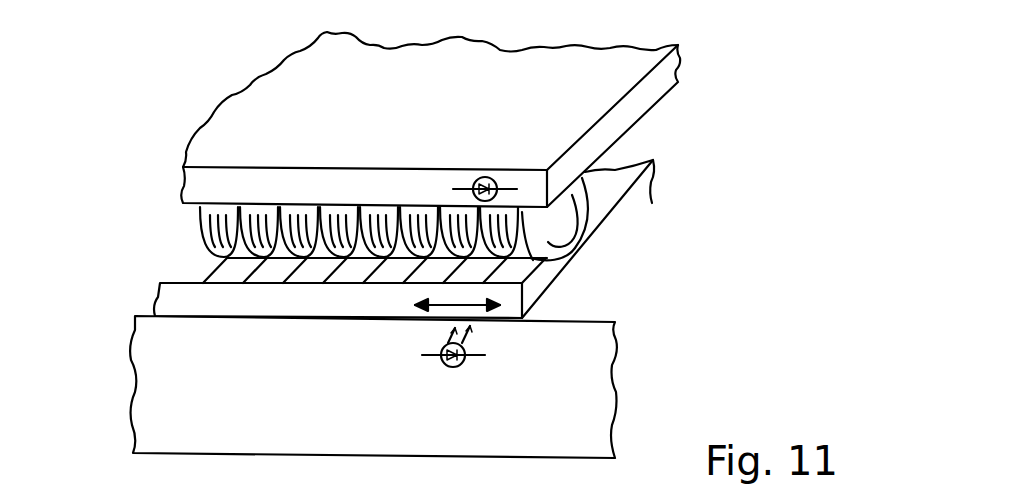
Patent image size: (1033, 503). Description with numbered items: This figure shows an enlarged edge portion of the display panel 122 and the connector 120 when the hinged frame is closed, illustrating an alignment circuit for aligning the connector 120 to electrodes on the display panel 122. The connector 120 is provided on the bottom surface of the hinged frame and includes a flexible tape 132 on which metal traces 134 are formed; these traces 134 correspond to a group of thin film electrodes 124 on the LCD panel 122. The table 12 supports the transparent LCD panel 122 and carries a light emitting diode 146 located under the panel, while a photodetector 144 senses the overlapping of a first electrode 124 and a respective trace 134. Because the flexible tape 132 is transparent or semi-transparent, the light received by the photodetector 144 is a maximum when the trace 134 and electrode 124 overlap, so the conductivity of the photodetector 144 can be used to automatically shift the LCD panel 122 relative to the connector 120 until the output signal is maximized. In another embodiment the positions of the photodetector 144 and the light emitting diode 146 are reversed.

The table 12 is at (593, 375).
The connector 120 is at (188, 225).
The display panel 122 is at (593, 242).
The thin film electrodes 124 is at (500, 265).
The flexible tape 132 is at (505, 262).
The metal traces 134 is at (477, 237).
The photodetector 144 is at (467, 183).
The light emitting diode 146 is at (447, 367).